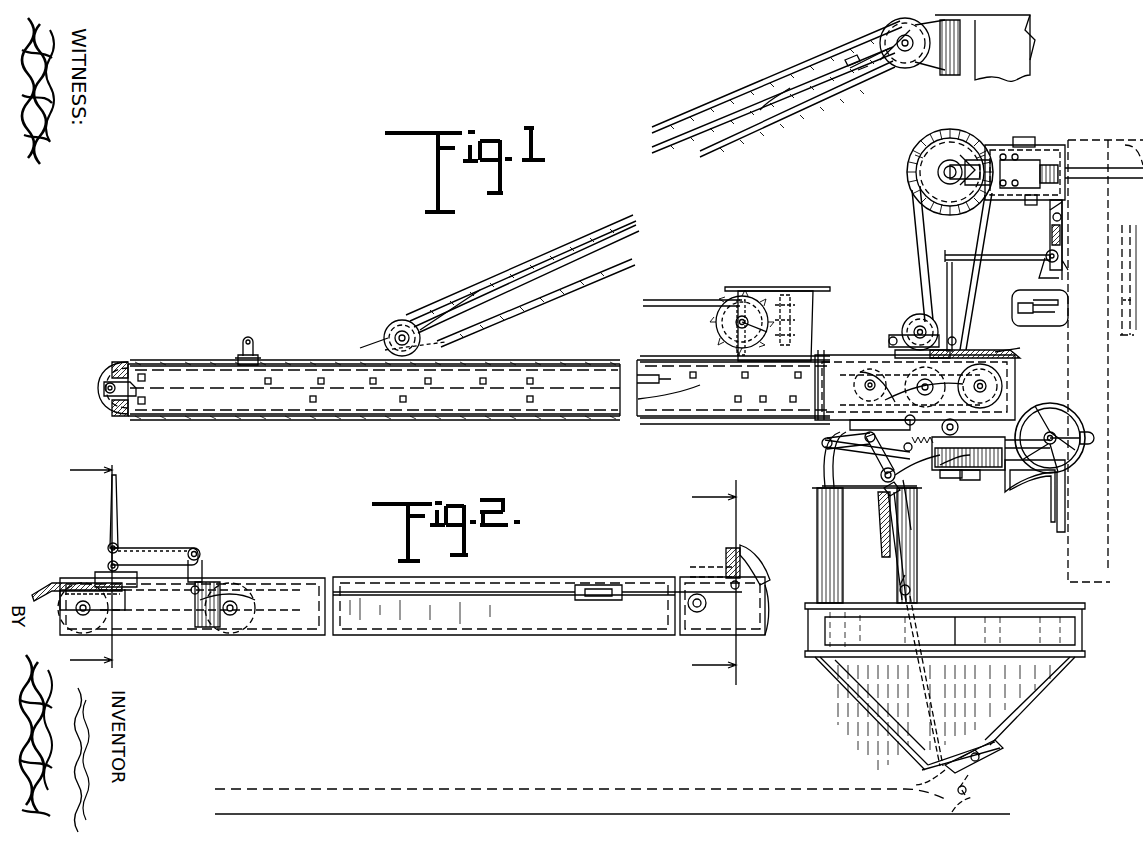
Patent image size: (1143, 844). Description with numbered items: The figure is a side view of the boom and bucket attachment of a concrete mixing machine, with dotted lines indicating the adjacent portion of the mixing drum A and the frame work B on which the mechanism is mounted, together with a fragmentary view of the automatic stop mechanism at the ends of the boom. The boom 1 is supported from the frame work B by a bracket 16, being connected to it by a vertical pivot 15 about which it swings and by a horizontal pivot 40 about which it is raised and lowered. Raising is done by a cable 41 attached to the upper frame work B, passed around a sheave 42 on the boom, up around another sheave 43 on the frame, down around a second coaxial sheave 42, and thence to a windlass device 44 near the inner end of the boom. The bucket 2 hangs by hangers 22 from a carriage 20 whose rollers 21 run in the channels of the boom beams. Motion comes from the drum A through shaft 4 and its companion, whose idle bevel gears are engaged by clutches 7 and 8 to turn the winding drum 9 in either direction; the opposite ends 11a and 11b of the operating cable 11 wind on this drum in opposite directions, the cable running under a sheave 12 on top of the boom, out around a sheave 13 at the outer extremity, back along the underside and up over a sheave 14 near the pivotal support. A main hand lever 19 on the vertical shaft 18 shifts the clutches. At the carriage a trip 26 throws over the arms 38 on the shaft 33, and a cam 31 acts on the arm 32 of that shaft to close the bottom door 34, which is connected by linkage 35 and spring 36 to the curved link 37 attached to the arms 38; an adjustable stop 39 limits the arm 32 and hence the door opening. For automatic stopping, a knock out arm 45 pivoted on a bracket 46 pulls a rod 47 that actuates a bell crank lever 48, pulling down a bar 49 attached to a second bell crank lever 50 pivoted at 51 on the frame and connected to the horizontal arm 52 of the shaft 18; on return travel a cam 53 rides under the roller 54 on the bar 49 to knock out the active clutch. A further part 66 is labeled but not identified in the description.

In FIG. 1, the boom 1 is at (596, 398).
In FIG. 2, the boom 1 is at (538, 615).
In FIG. 1, the bucket 2 is at (870, 692).
In FIG. 1, the shaft 4 is at (1120, 150).
In FIG. 2, the clutch 7 is at (91, 566).
In FIG. 2, the clutch 8 is at (714, 582).
In FIG. 1, the winding drum 9 is at (927, 190).
In FIG. 1, the operating cable 11 is at (588, 362).
In FIG. 1, the end portion of operating cable 11a is at (920, 232).
In FIG. 1, the end portion of operating cable 11b is at (993, 223).
In FIG. 1, the sheave 12 is at (927, 318).
In FIG. 1, the sheave 13 is at (98, 375).
In FIG. 1, the sheave 14 is at (978, 346).
In FIG. 1, the vertical pivot 15 is at (1000, 477).
In FIG. 1, the bracket 16 is at (1008, 474).
In FIG. 1, the vertical shaft 18 is at (1068, 241).
In FIG. 1, the main hand lever 19 is at (1040, 318).
In FIG. 1, the carriage 20 is at (890, 368).
In FIG. 2, the carriage 20 is at (150, 640).
In FIG. 1, the rollers 21 is at (1000, 388).
In FIG. 2, the rollers 21 is at (90, 625).
In FIG. 1, the hangers 22 is at (825, 510).
In FIG. 1, the trip 26 is at (825, 450).
In FIG. 1, the cam 31 is at (843, 360).
In FIG. 1, the arm 32 is at (845, 470).
In FIG. 1, the shaft 33 is at (903, 486).
In FIG. 1, the bottom door 34 is at (962, 766).
In FIG. 1, the linkage 35 is at (925, 593).
In FIG. 1, the spring 36 is at (885, 526).
In FIG. 1, the curved link 37 is at (938, 462).
In FIG. 1, the throw over arms 38 is at (835, 490).
In FIG. 1, the adjustable stop 39 is at (915, 460).
In FIG. 1, the horizontal pivot 40 is at (940, 430).
In FIG. 1, the cable 41 is at (797, 126).
In FIG. 1, the sheave 42 is at (415, 316).
In FIG. 1, the sheave 43 is at (910, 57).
In FIG. 1, the windlass device 44 is at (765, 292).
In FIG. 1, the knock out or shifter arm 45 is at (242, 356).
In FIG. 2, the knock out or shifter arm 45 is at (758, 576).
In FIG. 1, the bracket 46 is at (253, 356).
In FIG. 2, the bracket 46 is at (726, 558).
In FIG. 1, the pull rod 47 is at (544, 380).
In FIG. 2, the pull rod 47 is at (530, 595).
In FIG. 1, the bell crank lever 48 is at (888, 330).
In FIG. 2, the bell crank lever 48 is at (167, 550).
In FIG. 1, the bar 49 is at (958, 292).
In FIG. 2, the bar 49 is at (118, 513).
In FIG. 1, the bell crank lever 50 is at (1054, 237).
In FIG. 1, the pivot 51 is at (1064, 254).
In FIG. 1, the horizontal arm 52 is at (1060, 218).
In FIG. 1, the cam 53 is at (1013, 350).
In FIG. 2, the cam 53 is at (57, 575).
In FIG. 2, the roller 54 is at (106, 563).
In FIG. 1, the bearing cap 66 is at (1030, 143).
In FIG. 1, the mixing drum A is at (1131, 351).
In FIG. 1, the frame work B is at (1030, 42).